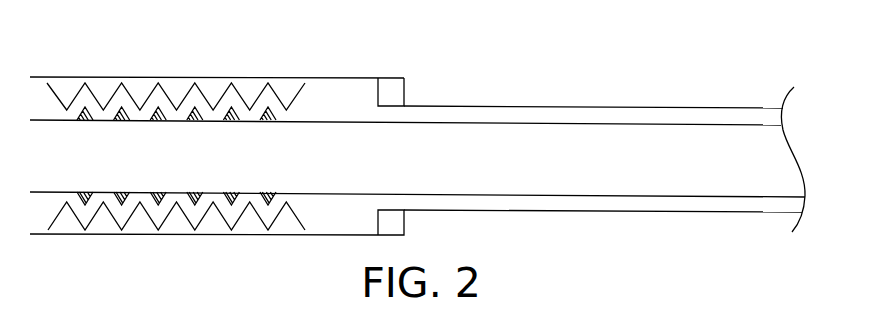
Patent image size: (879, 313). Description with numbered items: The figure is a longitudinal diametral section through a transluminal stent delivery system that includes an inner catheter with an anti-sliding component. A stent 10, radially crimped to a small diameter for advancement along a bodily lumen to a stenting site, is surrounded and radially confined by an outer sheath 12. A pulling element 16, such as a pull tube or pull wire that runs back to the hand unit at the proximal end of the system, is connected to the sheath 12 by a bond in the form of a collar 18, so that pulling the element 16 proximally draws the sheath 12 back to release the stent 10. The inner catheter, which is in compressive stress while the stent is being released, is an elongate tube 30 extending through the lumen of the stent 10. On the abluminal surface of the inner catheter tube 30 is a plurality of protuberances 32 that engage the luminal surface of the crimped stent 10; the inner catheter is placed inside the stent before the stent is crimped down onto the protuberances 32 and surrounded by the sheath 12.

The stent 10 is at (183, 93).
The outer sheath 12 is at (338, 78).
The pulling element 16 is at (533, 106).
The collar 18 is at (389, 78).
The inner catheter tube 30 is at (538, 124).
The protuberances 32 is at (125, 192).